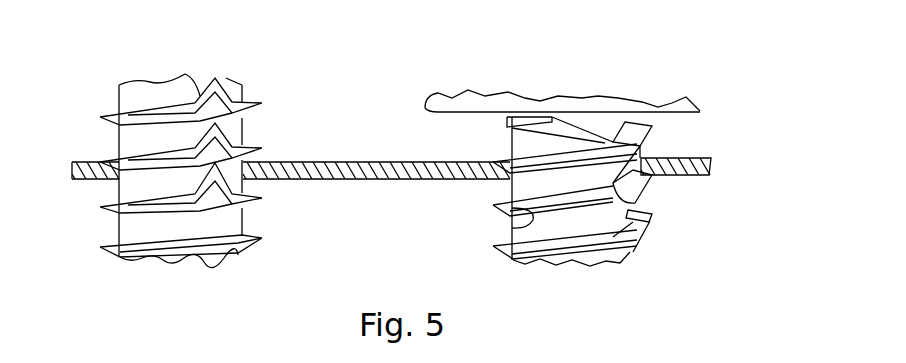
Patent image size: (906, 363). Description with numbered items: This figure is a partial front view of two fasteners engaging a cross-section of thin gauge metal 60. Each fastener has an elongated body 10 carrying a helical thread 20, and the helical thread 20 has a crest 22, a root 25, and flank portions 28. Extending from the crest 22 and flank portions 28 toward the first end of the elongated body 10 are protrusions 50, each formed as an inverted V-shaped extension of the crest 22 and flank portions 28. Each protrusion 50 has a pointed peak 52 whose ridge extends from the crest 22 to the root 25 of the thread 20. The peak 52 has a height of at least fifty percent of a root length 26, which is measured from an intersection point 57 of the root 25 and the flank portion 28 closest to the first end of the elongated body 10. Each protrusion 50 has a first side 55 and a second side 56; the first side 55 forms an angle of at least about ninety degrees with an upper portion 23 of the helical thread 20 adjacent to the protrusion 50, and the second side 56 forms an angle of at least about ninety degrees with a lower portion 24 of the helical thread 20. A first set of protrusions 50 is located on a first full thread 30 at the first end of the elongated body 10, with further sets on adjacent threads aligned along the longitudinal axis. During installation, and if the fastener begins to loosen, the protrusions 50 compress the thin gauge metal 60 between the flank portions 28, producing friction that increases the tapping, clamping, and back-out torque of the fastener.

The elongated body 10 is at (245, 145).
The helical thread 20 is at (180, 203).
The crest 22 is at (230, 112).
The upper portion 23 is at (245, 152).
The lower portion 24 is at (174, 104).
The root 25 is at (112, 187).
The root length 26 is at (507, 148).
The flank portions 28 is at (245, 115).
The first full thread 30 is at (507, 157).
The protrusion 50 is at (211, 181).
The peak 52 is at (267, 180).
The first side 55 is at (245, 133).
The second side 56 is at (199, 97).
The intersection point 57 is at (612, 138).
The thin gauge metal 60 is at (365, 180).